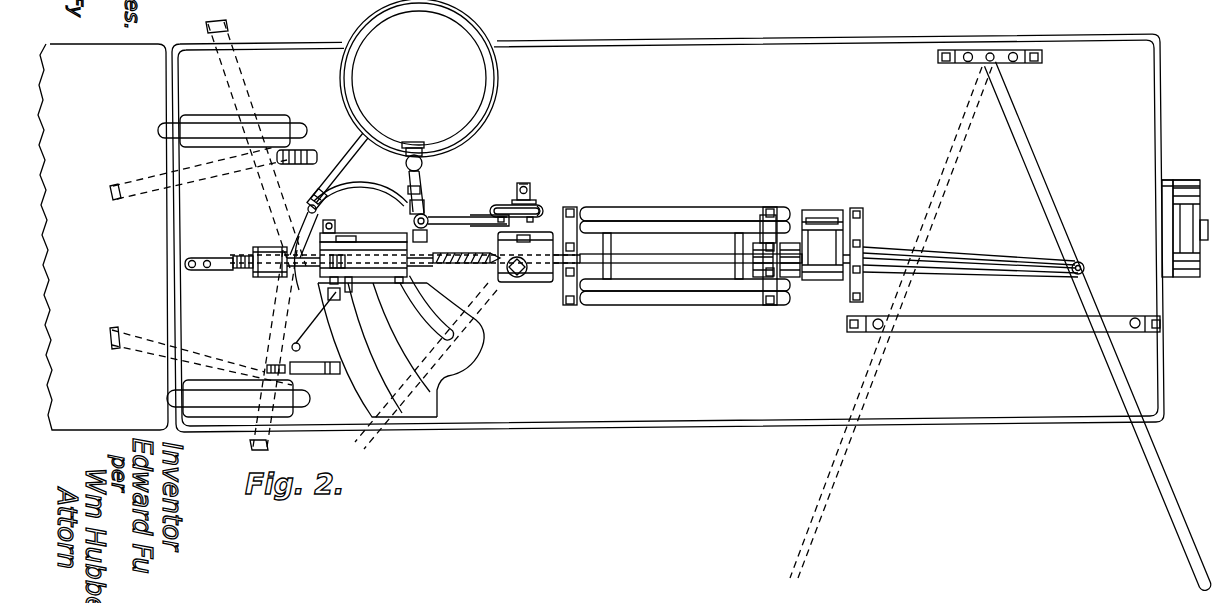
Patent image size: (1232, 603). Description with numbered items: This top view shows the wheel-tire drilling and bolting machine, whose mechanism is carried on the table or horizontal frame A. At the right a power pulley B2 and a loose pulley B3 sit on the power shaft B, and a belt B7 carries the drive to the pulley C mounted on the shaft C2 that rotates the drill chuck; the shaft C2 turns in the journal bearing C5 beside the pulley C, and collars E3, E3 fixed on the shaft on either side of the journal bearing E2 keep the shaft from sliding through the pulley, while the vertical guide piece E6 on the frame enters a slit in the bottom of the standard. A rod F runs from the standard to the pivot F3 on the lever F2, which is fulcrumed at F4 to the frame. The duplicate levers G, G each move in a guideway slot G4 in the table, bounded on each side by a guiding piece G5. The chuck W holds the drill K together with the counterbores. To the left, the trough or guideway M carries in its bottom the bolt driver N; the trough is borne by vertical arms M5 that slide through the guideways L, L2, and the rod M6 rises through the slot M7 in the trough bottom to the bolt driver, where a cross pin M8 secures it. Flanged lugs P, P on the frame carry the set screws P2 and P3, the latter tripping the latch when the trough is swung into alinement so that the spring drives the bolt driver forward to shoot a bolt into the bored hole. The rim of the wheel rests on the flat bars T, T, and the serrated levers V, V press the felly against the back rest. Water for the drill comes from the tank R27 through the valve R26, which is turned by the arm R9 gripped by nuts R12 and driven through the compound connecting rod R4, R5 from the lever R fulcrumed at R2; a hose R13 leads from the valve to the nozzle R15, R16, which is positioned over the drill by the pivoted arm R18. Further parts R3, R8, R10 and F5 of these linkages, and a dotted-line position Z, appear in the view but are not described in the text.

The table or horizontal frame A is at (722, 52).
The power shaft B is at (1205, 242).
The power pulley B2 is at (1168, 178).
The loose pulley B3 is at (1183, 280).
The belt B7 is at (832, 212).
The pulley C is at (847, 237).
The shaft C2 is at (680, 255).
The journal bearing C5 is at (808, 222).
The journal bearing E2 is at (773, 278).
The collars E3 is at (757, 243).
The vertical guide piece E6 is at (673, 256).
The rod F is at (998, 273).
The lever F2 is at (1093, 293).
The pivot connection F3 is at (1087, 267).
The fulcrum F4 is at (990, 52).
The guide bar F5 is at (977, 333).
The levers G is at (770, 212).
The guideway slot G4 is at (635, 216).
The guiding piece G5 is at (606, 208).
The drill K is at (448, 256).
The guideway L is at (357, 360).
The guideway L2 is at (414, 304).
The trough or guideway M is at (362, 250).
The vertical arm or support M5 is at (298, 325).
The rod M6 is at (335, 262).
The slot M7 is at (346, 282).
The cross pin M8 is at (330, 296).
The bolt driver N is at (303, 252).
The flanged lugs P is at (330, 222).
The set screw P2 is at (322, 236).
The set screw P3 is at (352, 233).
The lever R is at (521, 185).
The fulcrum R2 is at (532, 188).
The loop R3 is at (540, 206).
The bar R4 is at (503, 205).
The bar R5 is at (468, 210).
The pivot R8 is at (429, 218).
The arm R9 is at (420, 206).
The post R10 is at (426, 170).
The nuts R12 is at (406, 186).
The hose R13 is at (361, 176).
The nozzle part R15 is at (305, 192).
The nozzle portion R16 is at (308, 208).
The arm R18 is at (327, 168).
The valve R26 is at (416, 146).
The tank R27 is at (419, 78).
The flat bars T is at (226, 137).
The lever V is at (312, 148).
The chuck W is at (530, 284).
The alternate position Z is at (198, 184).